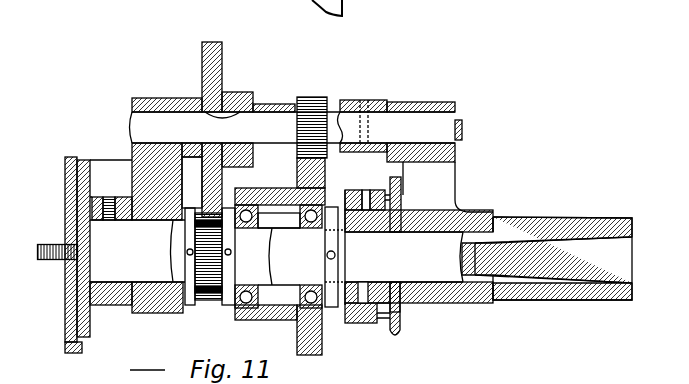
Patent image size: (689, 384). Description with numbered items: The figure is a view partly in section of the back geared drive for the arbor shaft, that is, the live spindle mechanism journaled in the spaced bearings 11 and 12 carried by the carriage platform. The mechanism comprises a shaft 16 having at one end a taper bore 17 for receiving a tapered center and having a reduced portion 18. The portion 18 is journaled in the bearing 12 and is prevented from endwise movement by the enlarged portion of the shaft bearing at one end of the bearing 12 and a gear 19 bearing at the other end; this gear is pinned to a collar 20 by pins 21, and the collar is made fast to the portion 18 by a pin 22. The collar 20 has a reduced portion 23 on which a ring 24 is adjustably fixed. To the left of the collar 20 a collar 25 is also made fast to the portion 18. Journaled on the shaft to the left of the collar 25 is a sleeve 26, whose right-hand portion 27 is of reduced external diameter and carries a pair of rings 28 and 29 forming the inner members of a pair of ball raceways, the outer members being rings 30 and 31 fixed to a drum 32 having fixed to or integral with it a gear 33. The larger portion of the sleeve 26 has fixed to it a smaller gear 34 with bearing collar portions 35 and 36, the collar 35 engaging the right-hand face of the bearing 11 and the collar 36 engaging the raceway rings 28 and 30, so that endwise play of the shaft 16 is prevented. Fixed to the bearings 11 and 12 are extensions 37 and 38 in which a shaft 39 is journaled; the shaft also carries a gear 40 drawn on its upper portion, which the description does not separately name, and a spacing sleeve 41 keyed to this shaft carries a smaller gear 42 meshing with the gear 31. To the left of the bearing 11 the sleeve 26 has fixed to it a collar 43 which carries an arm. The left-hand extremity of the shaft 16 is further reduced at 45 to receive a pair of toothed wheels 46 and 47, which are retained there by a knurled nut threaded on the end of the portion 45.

The bearing 11 is at (158, 313).
The bearing 12 is at (452, 300).
The shaft 16 is at (540, 212).
The taper bore 17 is at (553, 260).
The reduced portion 18 is at (404, 257).
The gear 19 is at (395, 335).
The collar 20 is at (334, 307).
The pins 21 is at (390, 195).
The pin 22 is at (364, 285).
The reduced portion 23 is at (345, 205).
The ring 24 is at (367, 190).
The collar 25 is at (331, 308).
The sleeve 26 is at (118, 305).
The reduced portion 27 is at (273, 205).
The ring 28 is at (250, 230).
The ring 29 is at (290, 256).
The ring 30 is at (247, 205).
The ring 31 is at (325, 190).
The drum 32 is at (235, 318).
The gear 33 is at (297, 336).
The smaller gear 34 is at (203, 300).
The bearing collar portion 35 is at (190, 208).
The bearing collar portion 36 is at (226, 208).
The extension 37 is at (160, 98).
The extension 38 is at (435, 102).
The shaft 39 is at (462, 130).
The gear 40 is at (222, 78).
The spacing sleeve 41 is at (380, 100).
The smaller gear 42 is at (322, 97).
The collar 43 is at (118, 197).
The reduced portion 45 is at (96, 251).
The toothed wheel 46 is at (70, 157).
The toothed wheel 47 is at (84, 160).